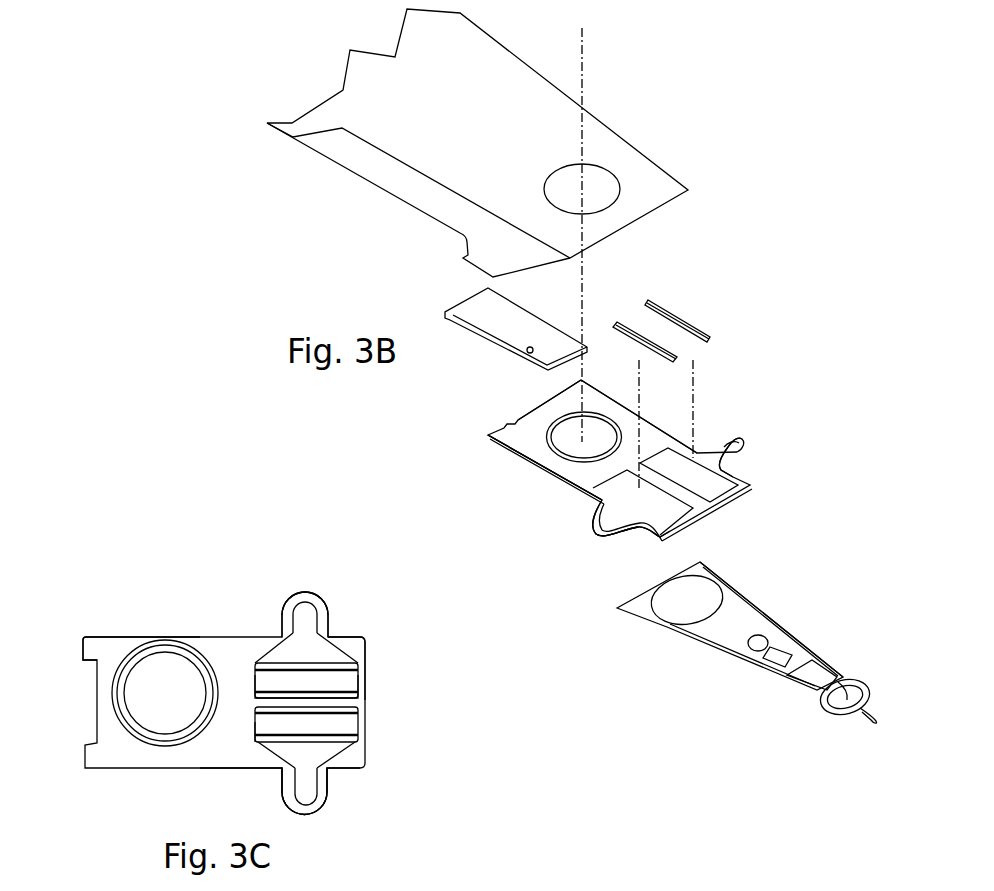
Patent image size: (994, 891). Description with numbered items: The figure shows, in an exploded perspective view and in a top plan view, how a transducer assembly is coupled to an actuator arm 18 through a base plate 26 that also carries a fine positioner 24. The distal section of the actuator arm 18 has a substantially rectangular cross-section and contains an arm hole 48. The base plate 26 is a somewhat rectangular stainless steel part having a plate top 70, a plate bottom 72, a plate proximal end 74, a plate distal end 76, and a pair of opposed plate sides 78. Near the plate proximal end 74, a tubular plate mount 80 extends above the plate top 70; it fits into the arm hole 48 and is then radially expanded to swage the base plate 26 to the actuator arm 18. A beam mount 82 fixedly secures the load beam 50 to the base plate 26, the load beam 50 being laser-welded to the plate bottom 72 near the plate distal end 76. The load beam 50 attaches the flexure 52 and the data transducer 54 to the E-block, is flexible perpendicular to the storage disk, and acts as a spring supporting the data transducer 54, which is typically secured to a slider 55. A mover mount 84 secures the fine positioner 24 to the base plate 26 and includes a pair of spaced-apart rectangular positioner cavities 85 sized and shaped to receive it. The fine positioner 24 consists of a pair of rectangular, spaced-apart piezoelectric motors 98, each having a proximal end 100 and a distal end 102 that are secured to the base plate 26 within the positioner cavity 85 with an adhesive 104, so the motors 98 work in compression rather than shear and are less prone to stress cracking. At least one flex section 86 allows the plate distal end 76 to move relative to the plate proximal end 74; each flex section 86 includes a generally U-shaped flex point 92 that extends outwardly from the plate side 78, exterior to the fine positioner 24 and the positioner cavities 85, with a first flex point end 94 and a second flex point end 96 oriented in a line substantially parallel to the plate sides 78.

In FIG. 3B, the actuator arm 18 is at (511, 27).
In FIG. 3B, the arm hole 48 is at (605, 187).
In FIG. 3B, the fine positioner 24 is at (648, 292).
In FIG. 3B, the piezoelectric motor 98 is at (670, 310).
In FIG. 3C, the piezoelectric motor 98 is at (350, 722).
In FIG. 3B, the adhesive 104 is at (689, 358).
In FIG. 3B, the base plate 26 is at (521, 391).
In FIG. 3C, the base plate 26 is at (183, 627).
In FIG. 3B, the plate top 70 is at (658, 437).
In FIG. 3B, the plate mount 80 is at (547, 440).
In FIG. 3C, the plate mount 80 is at (150, 663).
In FIG. 3B, the plate proximal end 74 is at (533, 415).
In FIG. 3C, the plate proximal end 74 is at (97, 703).
In FIG. 3B, the plate sides 78 is at (623, 407).
In FIG. 3B, the plate bottom 72 is at (543, 475).
In FIG. 3B, the mover mount 84 is at (677, 523).
In FIG. 3C, the mover mount 84 is at (358, 677).
In FIG. 3B, the plate distal end 76 is at (737, 488).
In FIG. 3C, the plate distal end 76 is at (358, 692).
In FIG. 3B, the positioner cavity 85 is at (643, 495).
In FIG. 3C, the positioner cavity 85 is at (333, 743).
In FIG. 3B, the flex section 86 is at (742, 450).
In FIG. 3C, the flex section 86 is at (318, 600).
In FIG. 3B, the flex point 92 is at (588, 522).
In FIG. 3C, the flex point 92 is at (303, 595).
In FIG. 3B, the beam mount 82 is at (647, 535).
In FIG. 3C, the beam mount 82 is at (346, 633).
In FIG. 3B, the load beam 50 is at (713, 632).
In FIG. 3B, the flexure 52 is at (760, 605).
In FIG. 3B, the slider 55 is at (815, 670).
In FIG. 3B, the data transducer 54 is at (877, 722).
In FIG. 3C, the distal end 102 is at (352, 730).
In FIG. 3C, the proximal end 100 is at (253, 725).
In FIG. 3C, the first flex point end 94 is at (287, 778).
In FIG. 3C, the second flex point end 96 is at (325, 777).